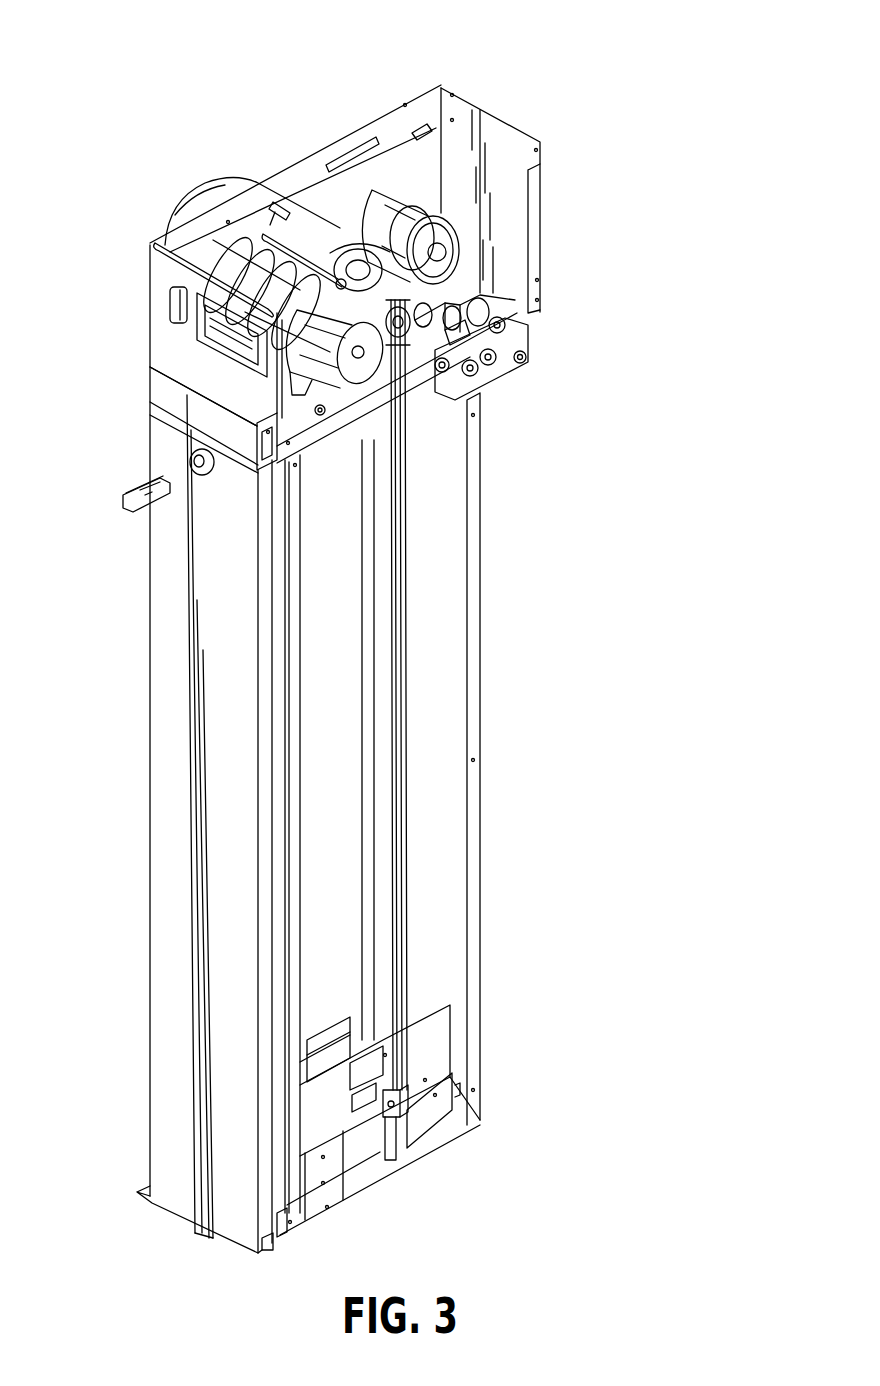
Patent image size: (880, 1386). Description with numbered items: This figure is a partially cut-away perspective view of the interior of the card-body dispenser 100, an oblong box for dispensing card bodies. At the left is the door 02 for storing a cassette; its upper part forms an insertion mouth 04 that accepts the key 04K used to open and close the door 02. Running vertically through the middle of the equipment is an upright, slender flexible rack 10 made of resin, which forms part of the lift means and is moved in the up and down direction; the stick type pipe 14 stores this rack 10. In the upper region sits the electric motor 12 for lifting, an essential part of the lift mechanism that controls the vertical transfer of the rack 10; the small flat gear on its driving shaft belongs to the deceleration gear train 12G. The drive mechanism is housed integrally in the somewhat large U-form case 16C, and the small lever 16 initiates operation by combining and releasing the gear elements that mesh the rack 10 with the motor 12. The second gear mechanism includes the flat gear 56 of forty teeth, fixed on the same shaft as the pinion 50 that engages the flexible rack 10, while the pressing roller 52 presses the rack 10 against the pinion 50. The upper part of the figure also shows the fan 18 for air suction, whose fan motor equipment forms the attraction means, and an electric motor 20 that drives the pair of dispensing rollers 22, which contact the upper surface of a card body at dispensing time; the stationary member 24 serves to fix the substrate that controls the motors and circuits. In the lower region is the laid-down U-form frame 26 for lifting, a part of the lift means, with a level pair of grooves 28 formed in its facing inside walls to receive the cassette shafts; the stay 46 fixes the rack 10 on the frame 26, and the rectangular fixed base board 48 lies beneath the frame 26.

The dispenser 100 is at (607, 64).
The door 02 is at (180, 640).
The insertion mouth 04 is at (192, 455).
The key 04K is at (123, 511).
The flexible rack 10 is at (405, 562).
The electric motor for lifting 12 is at (362, 392).
The deceleration gear train 12G is at (248, 273).
The stick type pipe 14 is at (205, 197).
The lever 16 is at (168, 308).
The U-form case 16C is at (203, 360).
The fan 18 is at (357, 255).
The second motor 20 is at (436, 218).
The dispensing rollers 22 is at (487, 312).
The stationary member 24 is at (397, 138).
The frame for lifting 26 is at (443, 1108).
The grooves 28 is at (345, 1040).
The stay 46 is at (393, 1137).
The fixed base board 48 is at (320, 1125).
The pinion 50 is at (388, 330).
The roller for pressing 52 is at (500, 370).
The flat gear 56 is at (313, 235).